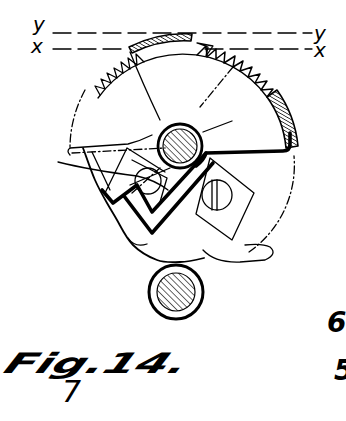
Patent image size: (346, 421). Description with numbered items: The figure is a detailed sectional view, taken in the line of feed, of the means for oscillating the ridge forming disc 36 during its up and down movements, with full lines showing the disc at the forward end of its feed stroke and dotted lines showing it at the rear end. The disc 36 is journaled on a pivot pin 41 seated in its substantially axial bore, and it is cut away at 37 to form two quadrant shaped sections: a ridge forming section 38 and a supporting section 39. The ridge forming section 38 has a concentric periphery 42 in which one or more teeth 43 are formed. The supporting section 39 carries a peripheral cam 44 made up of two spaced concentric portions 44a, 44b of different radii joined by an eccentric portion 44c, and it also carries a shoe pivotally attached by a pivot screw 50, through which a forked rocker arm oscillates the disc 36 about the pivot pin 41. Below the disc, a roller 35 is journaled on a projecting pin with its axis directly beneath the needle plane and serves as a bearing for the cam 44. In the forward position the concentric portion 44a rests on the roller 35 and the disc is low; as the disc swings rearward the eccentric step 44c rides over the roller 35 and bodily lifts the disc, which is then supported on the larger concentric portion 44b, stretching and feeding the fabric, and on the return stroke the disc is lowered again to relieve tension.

The roller 35 is at (205, 289).
The ridge forming disc 36 is at (265, 121).
The cut-away 37 is at (155, 100).
The ridge forming section 38 is at (182, 154).
The supporting section 39 is at (147, 250).
The pivot pin 41 is at (157, 133).
The concentric periphery 42 is at (174, 33).
The teeth 43 is at (213, 44).
The peripheral cam 44 is at (105, 225).
The concentric peripheral portion 44a is at (90, 183).
The concentric peripheral portion 44b is at (262, 258).
The eccentric portion 44c is at (132, 250).
The pivot screw 50 is at (96, 167).